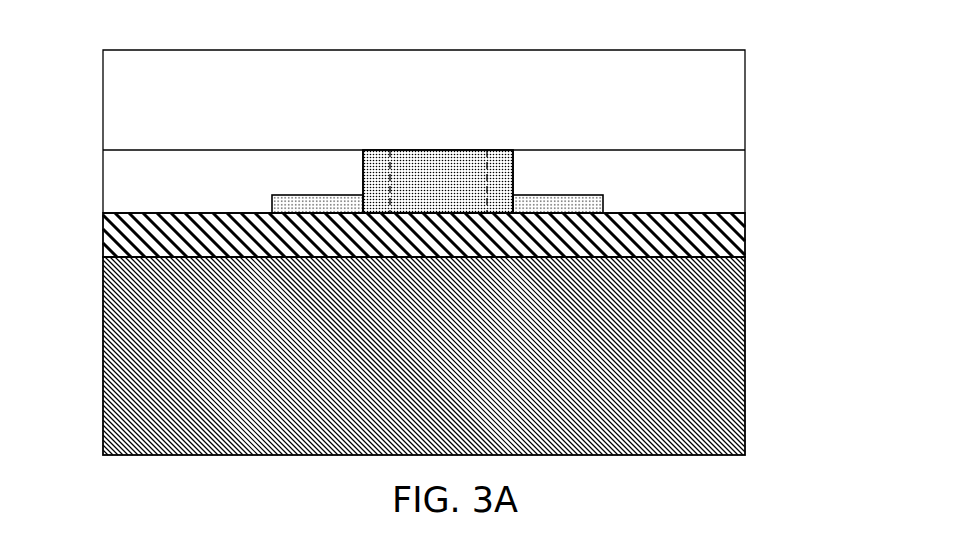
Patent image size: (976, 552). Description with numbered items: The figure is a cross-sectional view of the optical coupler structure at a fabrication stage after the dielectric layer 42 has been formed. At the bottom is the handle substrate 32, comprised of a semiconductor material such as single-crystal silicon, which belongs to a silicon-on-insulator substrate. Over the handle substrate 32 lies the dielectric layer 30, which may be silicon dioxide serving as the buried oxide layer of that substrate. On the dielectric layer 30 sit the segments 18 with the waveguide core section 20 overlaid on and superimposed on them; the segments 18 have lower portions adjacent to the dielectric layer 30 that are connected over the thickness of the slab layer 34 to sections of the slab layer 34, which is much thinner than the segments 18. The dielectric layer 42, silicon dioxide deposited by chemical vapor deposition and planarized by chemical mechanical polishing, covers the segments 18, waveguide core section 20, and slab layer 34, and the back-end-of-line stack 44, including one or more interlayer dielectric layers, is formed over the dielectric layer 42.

The back-end-of-line stack 44 is at (700, 95).
The dielectric layer 42 is at (120, 178).
The waveguide core section 20 is at (446, 172).
The segments 18 is at (378, 174).
The slab layer 34 is at (292, 205).
The dielectric layer 30 is at (702, 237).
The handle substrate 32 is at (133, 374).